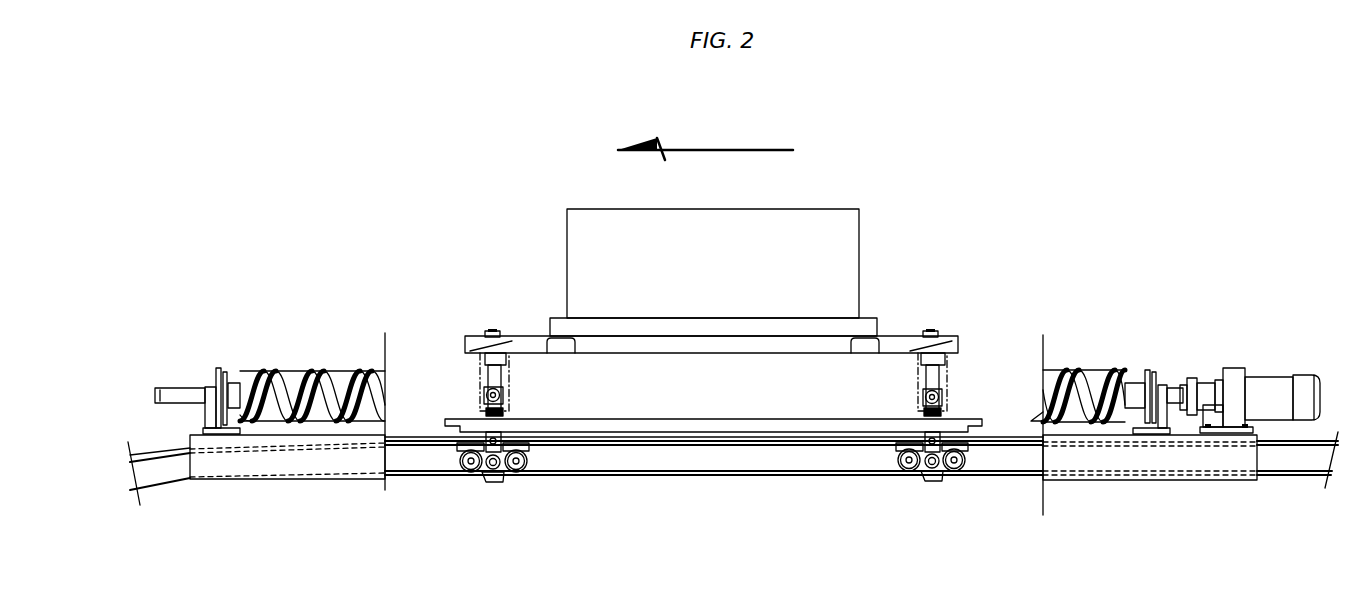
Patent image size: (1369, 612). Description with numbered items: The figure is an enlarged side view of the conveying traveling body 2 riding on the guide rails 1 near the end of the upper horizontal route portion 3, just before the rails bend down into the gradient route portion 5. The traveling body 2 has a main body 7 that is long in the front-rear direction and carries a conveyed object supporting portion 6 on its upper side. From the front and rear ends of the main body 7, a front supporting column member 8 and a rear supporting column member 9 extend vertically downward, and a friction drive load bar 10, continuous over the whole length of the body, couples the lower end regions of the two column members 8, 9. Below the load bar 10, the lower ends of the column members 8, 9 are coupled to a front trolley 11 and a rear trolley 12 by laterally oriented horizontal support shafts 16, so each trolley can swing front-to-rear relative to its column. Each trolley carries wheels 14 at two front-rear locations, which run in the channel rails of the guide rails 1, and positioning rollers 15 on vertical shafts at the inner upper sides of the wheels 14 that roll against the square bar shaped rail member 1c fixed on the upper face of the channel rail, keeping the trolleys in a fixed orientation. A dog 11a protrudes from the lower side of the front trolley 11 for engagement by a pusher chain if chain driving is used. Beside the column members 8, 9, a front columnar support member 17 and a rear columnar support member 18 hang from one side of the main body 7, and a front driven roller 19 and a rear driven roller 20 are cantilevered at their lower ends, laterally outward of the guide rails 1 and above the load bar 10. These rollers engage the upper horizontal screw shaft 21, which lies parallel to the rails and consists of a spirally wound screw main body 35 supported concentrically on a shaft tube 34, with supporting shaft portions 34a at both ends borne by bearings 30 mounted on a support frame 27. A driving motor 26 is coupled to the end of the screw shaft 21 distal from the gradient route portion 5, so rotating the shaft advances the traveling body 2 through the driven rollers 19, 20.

The guide rails 1 is at (764, 498).
The square bar shaped rail member 1c is at (652, 441).
The conveying traveling body 2 is at (808, 204).
The upper horizontal route portion 3 is at (786, 487).
The gradient route portion 5 is at (160, 497).
The conveyed object supporting portion 6 is at (705, 237).
The main body 7 is at (716, 346).
The front supporting column member 8 is at (488, 380).
The rear supporting column member 9 is at (939, 378).
The friction drive load bar 10 is at (731, 424).
The front trolley 11 is at (713, 467).
The dog 11a is at (493, 482).
The rear trolley 12 is at (920, 478).
The wheels 14 is at (469, 472).
The positioning rollers 15 is at (519, 442).
The horizontal support shafts 16 is at (499, 472).
The front columnar support member 17 is at (510, 381).
The rear columnar support member 18 is at (918, 380).
The front driven roller 19 is at (486, 397).
The rear driven roller 20 is at (946, 397).
The upper horizontal screw shaft 21 is at (682, 360).
The driving motor 26 is at (1273, 385).
The support frame 27 is at (272, 468).
The bearings 30 is at (210, 387).
The shaft tube 34 is at (354, 400).
The supporting shaft portions 34a is at (183, 388).
The screw main body 35 is at (281, 378).